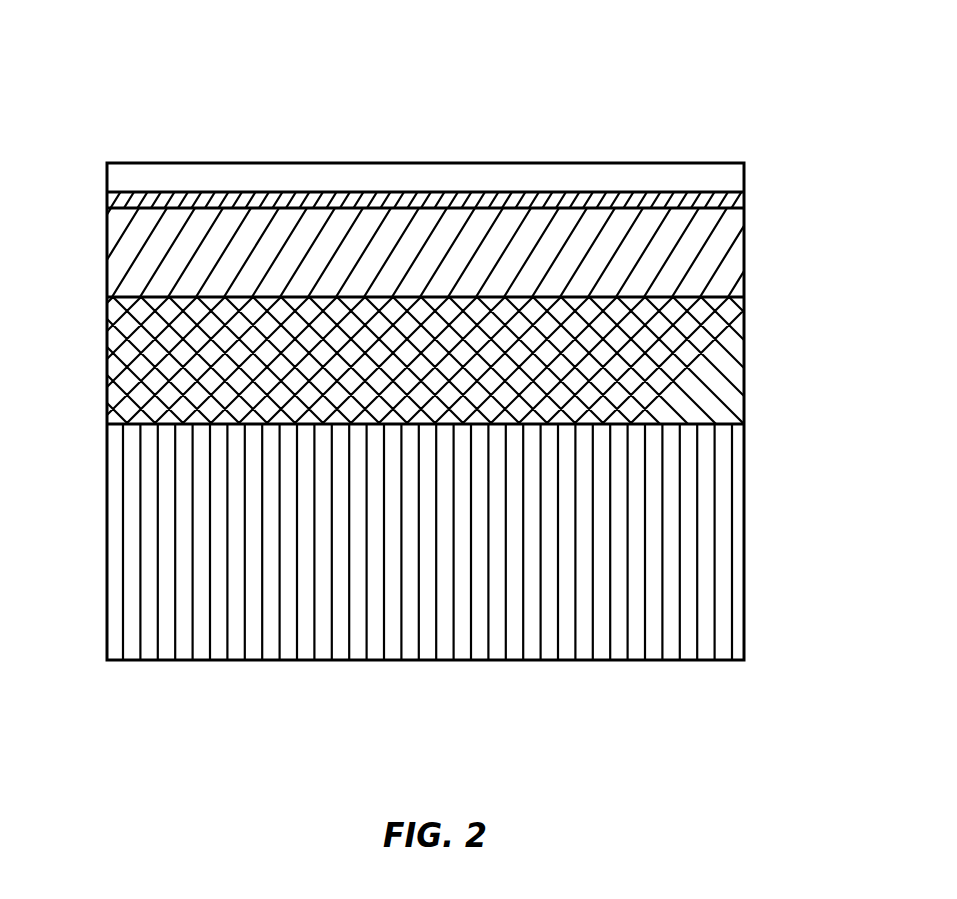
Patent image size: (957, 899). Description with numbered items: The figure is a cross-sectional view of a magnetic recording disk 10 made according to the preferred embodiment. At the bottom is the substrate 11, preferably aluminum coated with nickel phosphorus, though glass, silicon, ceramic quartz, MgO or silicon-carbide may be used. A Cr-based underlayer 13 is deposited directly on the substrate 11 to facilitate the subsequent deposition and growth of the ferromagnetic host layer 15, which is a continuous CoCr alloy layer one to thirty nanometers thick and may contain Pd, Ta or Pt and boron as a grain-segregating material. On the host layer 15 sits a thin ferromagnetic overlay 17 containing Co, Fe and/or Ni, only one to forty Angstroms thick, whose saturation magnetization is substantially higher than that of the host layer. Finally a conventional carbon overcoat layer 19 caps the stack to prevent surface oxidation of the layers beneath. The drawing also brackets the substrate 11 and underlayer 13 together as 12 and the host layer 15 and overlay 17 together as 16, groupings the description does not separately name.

The magnetic recording disk 10 is at (192, 128).
The substrate 11 is at (744, 518).
The substrate and seed layer group 12 is at (442, 477).
The Cr-based underlayer 13 is at (744, 360).
The ferromagnetic host layer 15 is at (744, 267).
The underlayer and magnetic layer group 16 is at (448, 227).
The ferromagnetic overlay 17 is at (744, 200).
The carbon overcoat layer 19 is at (533, 163).